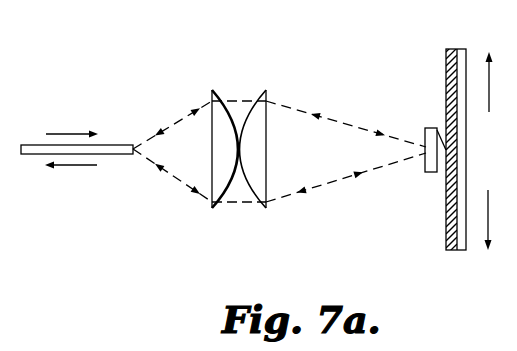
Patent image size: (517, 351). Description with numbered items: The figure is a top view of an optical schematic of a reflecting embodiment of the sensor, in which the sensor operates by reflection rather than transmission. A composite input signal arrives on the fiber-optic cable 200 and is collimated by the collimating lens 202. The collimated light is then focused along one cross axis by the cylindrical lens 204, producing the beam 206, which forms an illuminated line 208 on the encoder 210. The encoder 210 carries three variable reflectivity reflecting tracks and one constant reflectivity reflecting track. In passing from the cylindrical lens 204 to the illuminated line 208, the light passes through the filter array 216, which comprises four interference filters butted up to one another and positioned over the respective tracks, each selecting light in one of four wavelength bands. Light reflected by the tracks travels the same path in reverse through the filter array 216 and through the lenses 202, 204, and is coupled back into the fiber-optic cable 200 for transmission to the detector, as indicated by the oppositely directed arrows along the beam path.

The fiber-optic cable 200 is at (108, 146).
The collimating lens 202 is at (213, 97).
The cylindrical lens 204 is at (267, 100).
The beam 206 is at (335, 115).
The illuminated line 208 is at (442, 145).
The encoder 210 is at (458, 50).
The filter array 216 is at (425, 176).